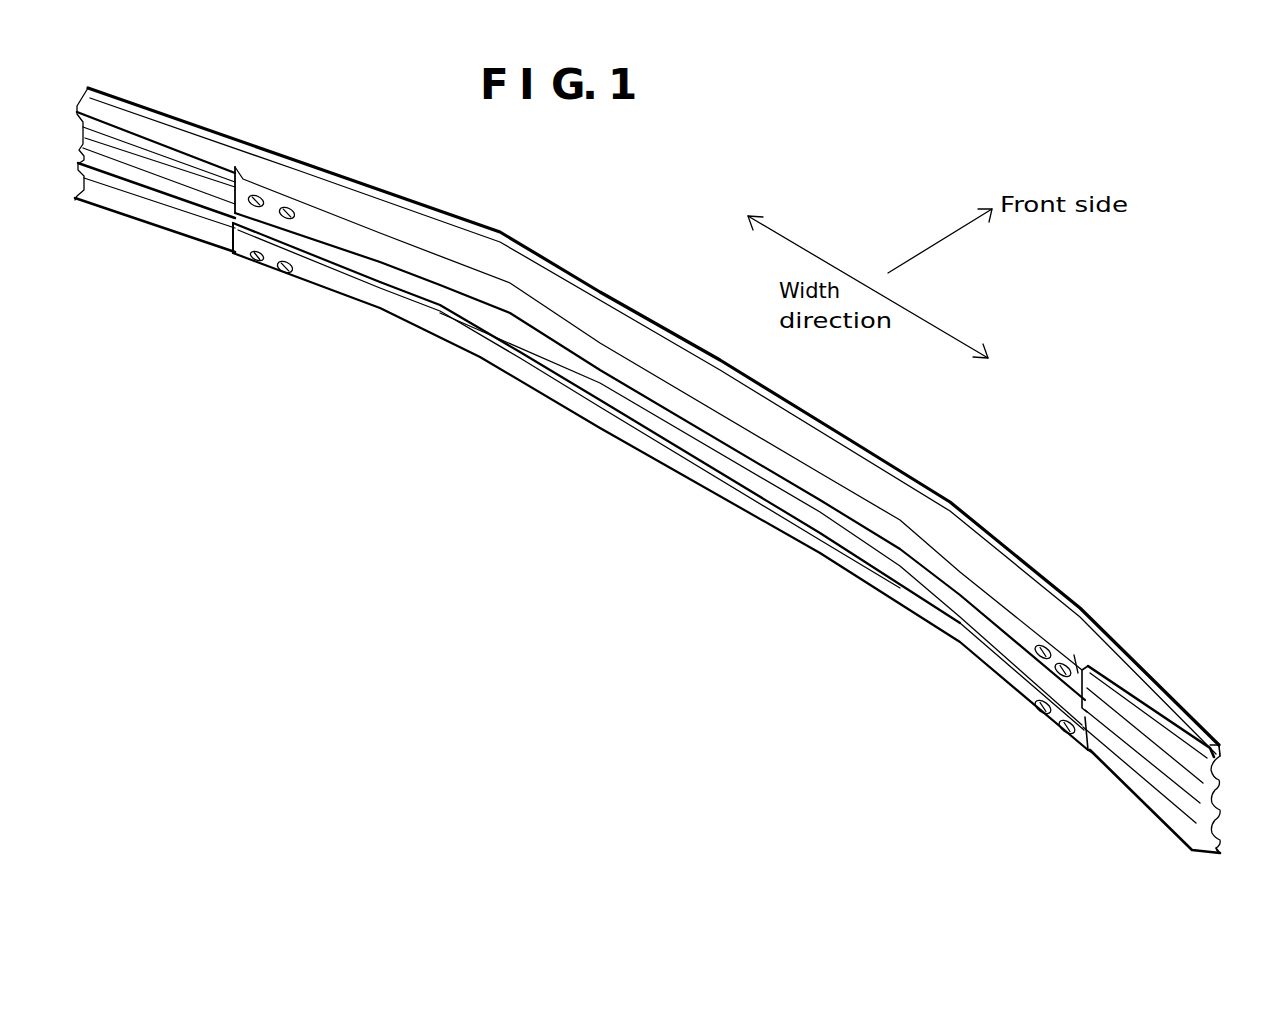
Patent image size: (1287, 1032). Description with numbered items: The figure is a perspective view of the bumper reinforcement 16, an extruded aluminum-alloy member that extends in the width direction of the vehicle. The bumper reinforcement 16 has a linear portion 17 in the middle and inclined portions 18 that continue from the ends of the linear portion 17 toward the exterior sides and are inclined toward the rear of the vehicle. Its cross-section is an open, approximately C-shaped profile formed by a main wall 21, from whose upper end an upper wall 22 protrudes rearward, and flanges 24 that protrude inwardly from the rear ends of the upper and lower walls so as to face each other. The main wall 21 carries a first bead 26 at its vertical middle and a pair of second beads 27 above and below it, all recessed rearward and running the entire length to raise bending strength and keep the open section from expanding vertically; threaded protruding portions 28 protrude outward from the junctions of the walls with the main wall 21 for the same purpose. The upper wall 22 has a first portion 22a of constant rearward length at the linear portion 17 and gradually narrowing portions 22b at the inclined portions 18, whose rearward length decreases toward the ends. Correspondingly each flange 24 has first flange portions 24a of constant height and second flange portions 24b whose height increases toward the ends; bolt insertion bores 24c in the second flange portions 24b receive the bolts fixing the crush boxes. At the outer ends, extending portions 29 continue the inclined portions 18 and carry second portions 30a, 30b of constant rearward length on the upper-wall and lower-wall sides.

The bumper reinforcement 16 is at (742, 327).
The linear portion 17 is at (780, 388).
The inclined portion 18 is at (248, 144).
The main wall 21 is at (1219, 780).
The upper wall 22 is at (897, 486).
The first portion 22a is at (568, 298).
The gradually narrowing portion 22b is at (306, 184).
The flange 24 is at (841, 496).
The first flange portion 24a is at (489, 290).
The second flange portion 24b is at (323, 224).
The bolt insertion bore 24c is at (278, 274).
The first bead 26 is at (1220, 808).
The second bead 27 is at (1219, 762).
The threaded protruding portion 28 is at (1207, 740).
The extending portion 29 is at (192, 120).
The second portion 30a is at (126, 116).
The second portion 30b is at (189, 230).